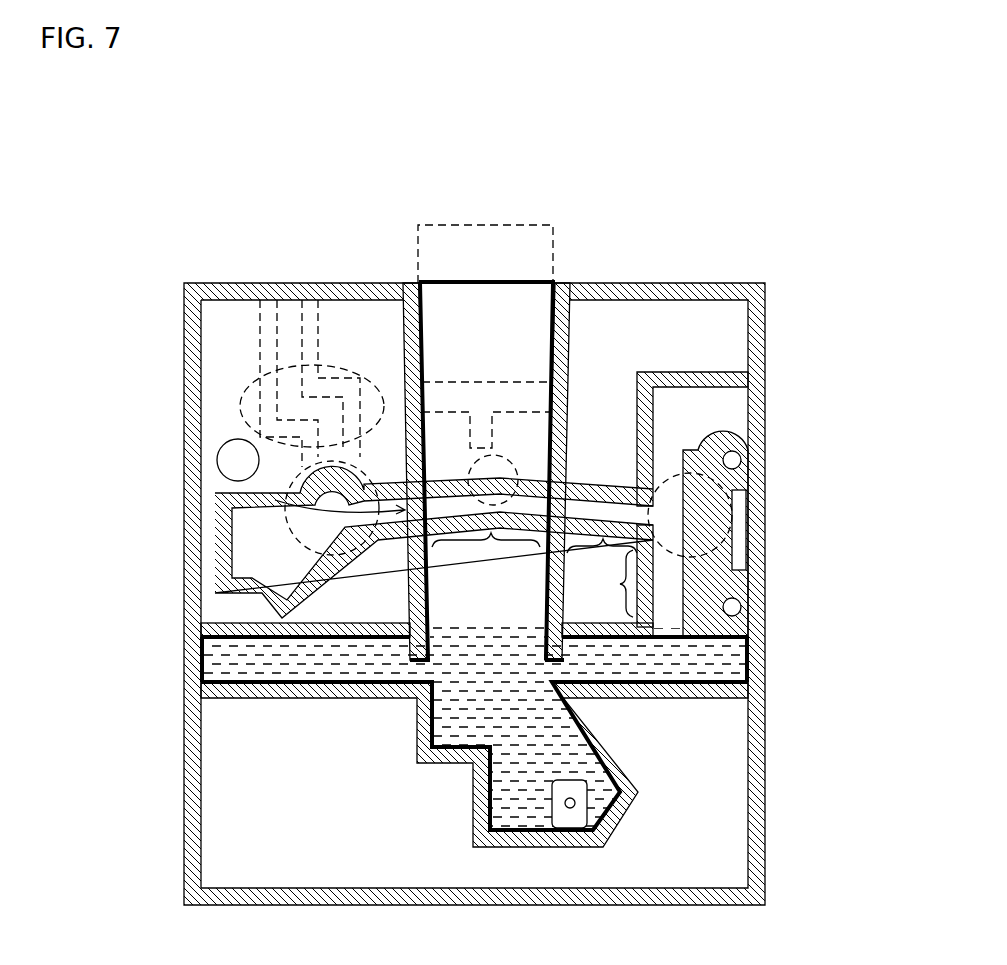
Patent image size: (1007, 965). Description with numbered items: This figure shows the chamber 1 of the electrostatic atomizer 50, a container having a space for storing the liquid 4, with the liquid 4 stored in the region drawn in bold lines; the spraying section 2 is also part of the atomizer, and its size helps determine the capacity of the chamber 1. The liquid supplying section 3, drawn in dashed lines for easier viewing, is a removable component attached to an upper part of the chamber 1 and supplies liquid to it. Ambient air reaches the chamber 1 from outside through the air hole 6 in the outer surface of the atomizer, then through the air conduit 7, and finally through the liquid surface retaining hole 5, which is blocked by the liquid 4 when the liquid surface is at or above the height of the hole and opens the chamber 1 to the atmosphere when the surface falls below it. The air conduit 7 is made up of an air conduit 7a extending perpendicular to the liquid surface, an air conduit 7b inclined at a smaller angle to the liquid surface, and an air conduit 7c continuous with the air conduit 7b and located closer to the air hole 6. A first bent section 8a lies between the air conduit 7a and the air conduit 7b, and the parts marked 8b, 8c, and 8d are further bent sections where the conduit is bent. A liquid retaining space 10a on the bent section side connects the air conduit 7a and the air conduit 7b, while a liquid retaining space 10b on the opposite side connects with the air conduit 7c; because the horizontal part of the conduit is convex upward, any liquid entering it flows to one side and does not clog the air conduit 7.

The chamber 1 is at (739, 663).
The spraying section 2 is at (579, 822).
The liquid supplying section 3 is at (497, 226).
The liquid 4 is at (192, 660).
The liquid surface retaining hole 5 is at (674, 612).
The air hole 6 is at (297, 322).
The air conduit 7 is at (290, 354).
The air conduit (first portion) 7a is at (625, 576).
The air conduit (second portion) 7b is at (598, 562).
The air conduit (third portion) 7c is at (486, 558).
The first bent section 8a is at (713, 513).
The bent section 8b is at (492, 462).
The bent section 8c is at (285, 523).
The bent section 8d is at (346, 365).
The liquid retaining space (first space) 10a is at (744, 426).
The liquid retaining space (second space) 10b is at (255, 542).
The electrostatic atomizer 50 is at (840, 224).